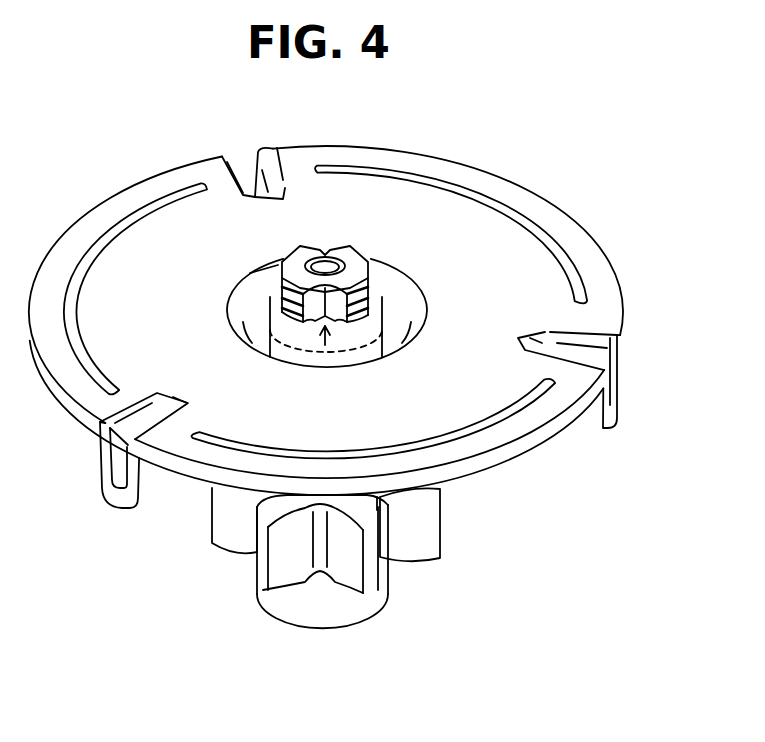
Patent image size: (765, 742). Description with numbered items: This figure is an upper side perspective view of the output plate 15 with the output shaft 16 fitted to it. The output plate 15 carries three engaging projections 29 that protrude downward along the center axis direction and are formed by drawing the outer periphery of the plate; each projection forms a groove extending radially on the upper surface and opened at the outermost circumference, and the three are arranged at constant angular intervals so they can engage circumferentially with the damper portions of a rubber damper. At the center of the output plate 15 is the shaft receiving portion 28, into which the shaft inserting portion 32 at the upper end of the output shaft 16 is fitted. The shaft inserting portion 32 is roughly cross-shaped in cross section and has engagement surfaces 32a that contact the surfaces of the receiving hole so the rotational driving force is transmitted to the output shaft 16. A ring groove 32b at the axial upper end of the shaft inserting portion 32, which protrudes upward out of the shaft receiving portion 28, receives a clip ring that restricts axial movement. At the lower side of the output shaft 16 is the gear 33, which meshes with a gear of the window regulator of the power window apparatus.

The output plate 15 is at (532, 159).
The output shaft 16 is at (403, 589).
The shaft receiving portion 28 is at (402, 326).
The engaging projections 29 is at (583, 418).
The shaft inserting portion 32 is at (372, 267).
The engagement surfaces 32a is at (331, 392).
The ring groove 32b is at (290, 352).
The gear 33 is at (415, 525).